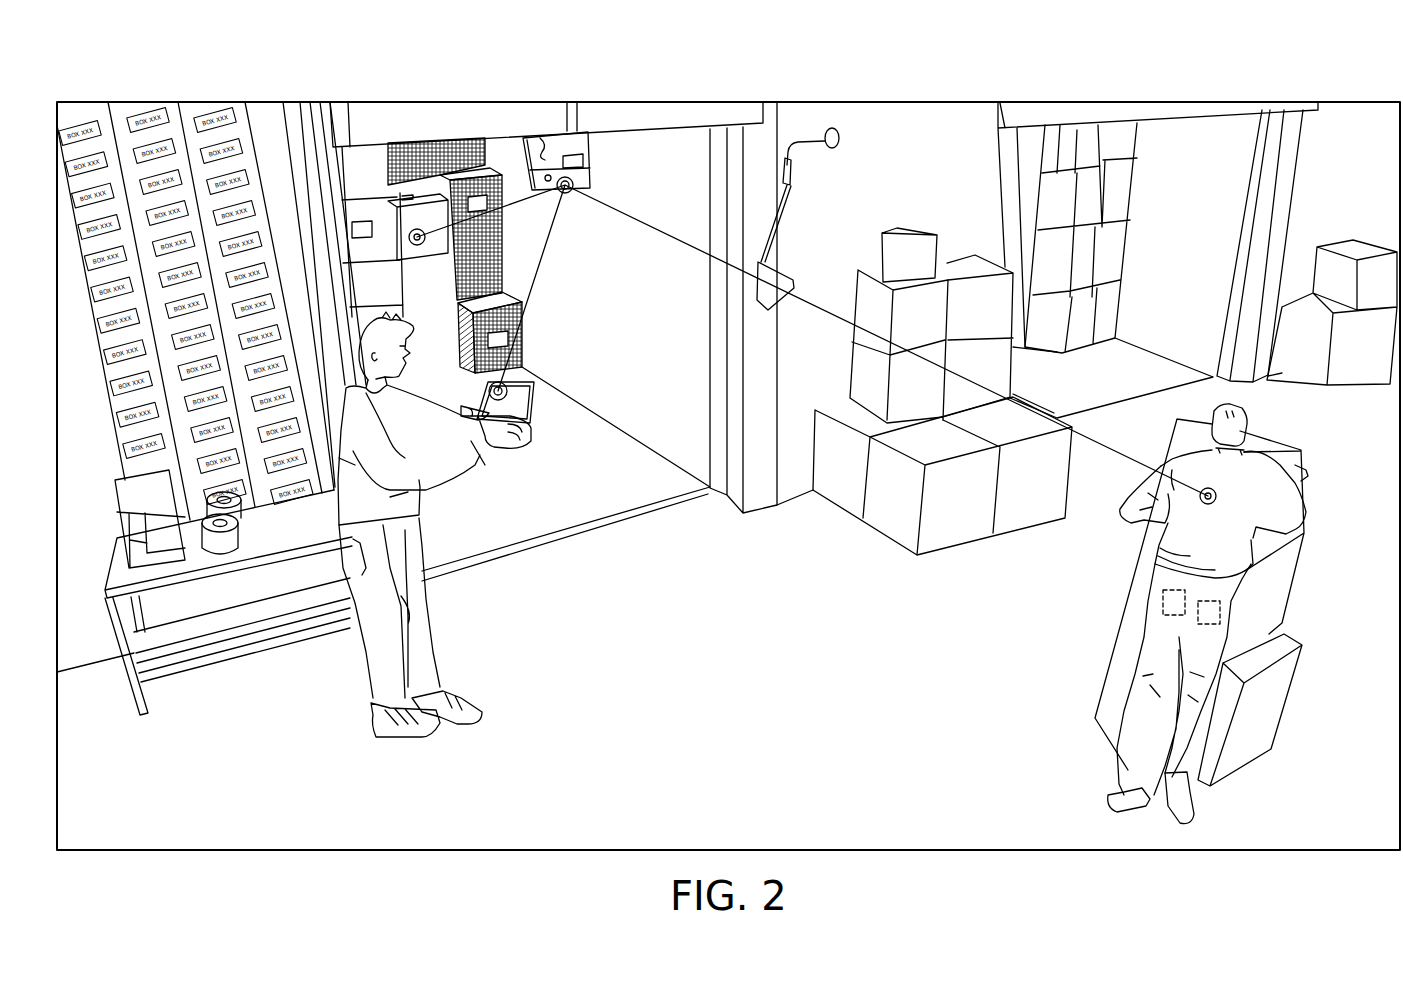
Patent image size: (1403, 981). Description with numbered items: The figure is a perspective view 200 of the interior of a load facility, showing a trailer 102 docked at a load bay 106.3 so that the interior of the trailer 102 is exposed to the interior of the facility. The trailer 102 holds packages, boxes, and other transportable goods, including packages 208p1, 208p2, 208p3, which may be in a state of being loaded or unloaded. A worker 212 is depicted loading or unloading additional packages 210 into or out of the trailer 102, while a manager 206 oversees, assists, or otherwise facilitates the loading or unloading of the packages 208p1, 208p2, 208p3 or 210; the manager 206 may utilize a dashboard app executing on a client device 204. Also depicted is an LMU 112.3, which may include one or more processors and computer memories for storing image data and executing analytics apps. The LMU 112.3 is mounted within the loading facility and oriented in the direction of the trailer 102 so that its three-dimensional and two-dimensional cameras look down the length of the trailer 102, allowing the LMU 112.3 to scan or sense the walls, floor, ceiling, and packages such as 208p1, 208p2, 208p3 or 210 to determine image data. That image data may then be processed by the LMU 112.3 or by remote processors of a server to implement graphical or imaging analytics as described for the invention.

The perspective view 200 is at (113, 80).
The trailer 102 is at (607, 470).
The load bay 106.3 is at (737, 396).
The LMU 112.3 is at (580, 177).
The client device 204 is at (559, 386).
The manager 206 is at (459, 698).
The package 208p1 is at (447, 141).
The package 208p2 is at (410, 231).
The package 208p3 is at (525, 352).
The additional packages 210 is at (1302, 450).
The worker 212 is at (1247, 424).